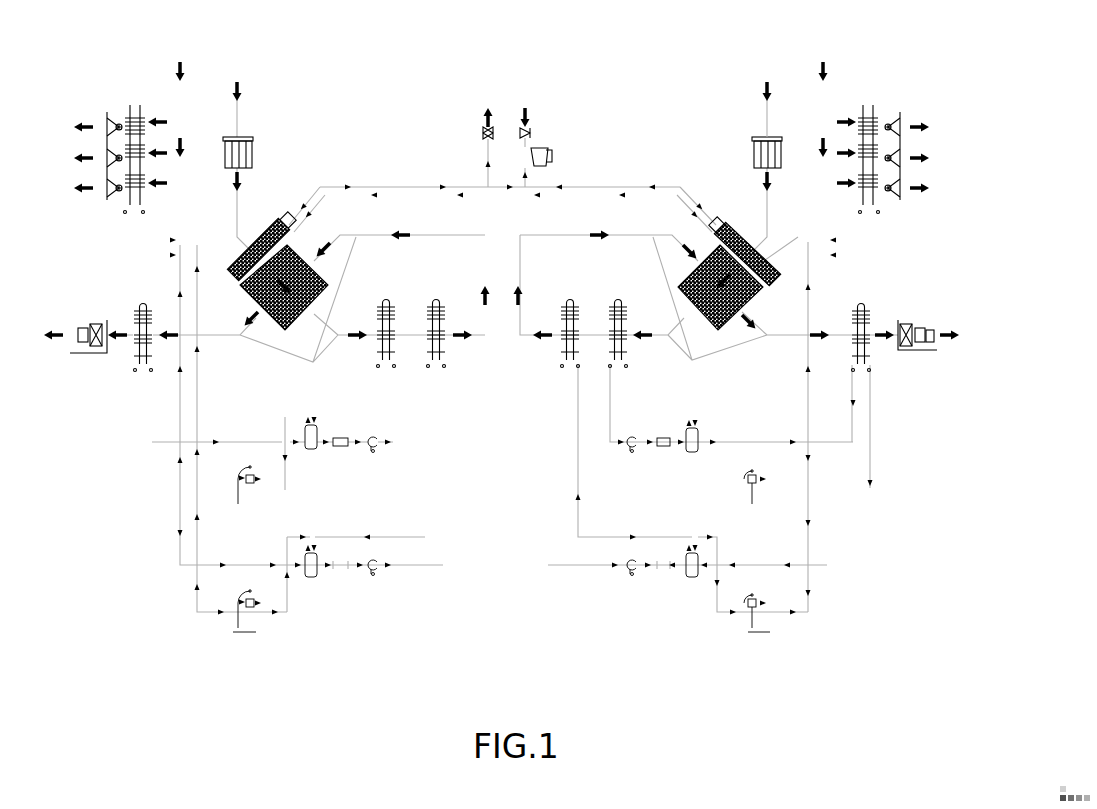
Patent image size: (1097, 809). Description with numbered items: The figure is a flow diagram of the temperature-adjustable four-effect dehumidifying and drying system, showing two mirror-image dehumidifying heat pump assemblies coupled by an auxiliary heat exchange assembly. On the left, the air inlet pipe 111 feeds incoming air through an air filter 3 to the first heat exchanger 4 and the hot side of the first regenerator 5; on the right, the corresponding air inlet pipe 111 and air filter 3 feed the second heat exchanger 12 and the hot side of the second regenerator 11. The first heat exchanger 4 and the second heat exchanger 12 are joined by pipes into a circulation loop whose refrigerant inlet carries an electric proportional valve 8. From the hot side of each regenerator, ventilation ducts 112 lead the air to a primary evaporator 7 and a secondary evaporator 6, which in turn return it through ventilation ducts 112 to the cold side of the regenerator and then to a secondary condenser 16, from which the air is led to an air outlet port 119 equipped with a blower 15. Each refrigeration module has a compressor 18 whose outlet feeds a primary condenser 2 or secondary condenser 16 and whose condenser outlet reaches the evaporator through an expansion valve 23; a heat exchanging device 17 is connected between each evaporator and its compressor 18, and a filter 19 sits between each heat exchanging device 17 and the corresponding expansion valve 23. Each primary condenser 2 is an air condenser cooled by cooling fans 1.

The cooling fan 1 is at (104, 125).
The primary condenser 2 is at (131, 129).
The air filter 3 is at (243, 153).
The first heat exchanger 4 is at (253, 255).
The first regenerator 5 is at (282, 225).
The secondary evaporator 6 is at (388, 300).
The primary evaporator 7 is at (438, 305).
The electric proportional valve 8 is at (541, 150).
The second regenerator 11 is at (720, 228).
The second heat exchanger 12 is at (748, 250).
The blower 15 is at (82, 347).
The secondary condenser 16 is at (143, 350).
The heat exchanging device 17 is at (308, 450).
The compressor 18 is at (238, 503).
The filter 19 is at (340, 446).
The expansion valve 23 is at (373, 450).
The air inlet pipe 111 is at (236, 124).
The ventilation duct 112 is at (313, 363).
The air outlet port 119 is at (108, 333).